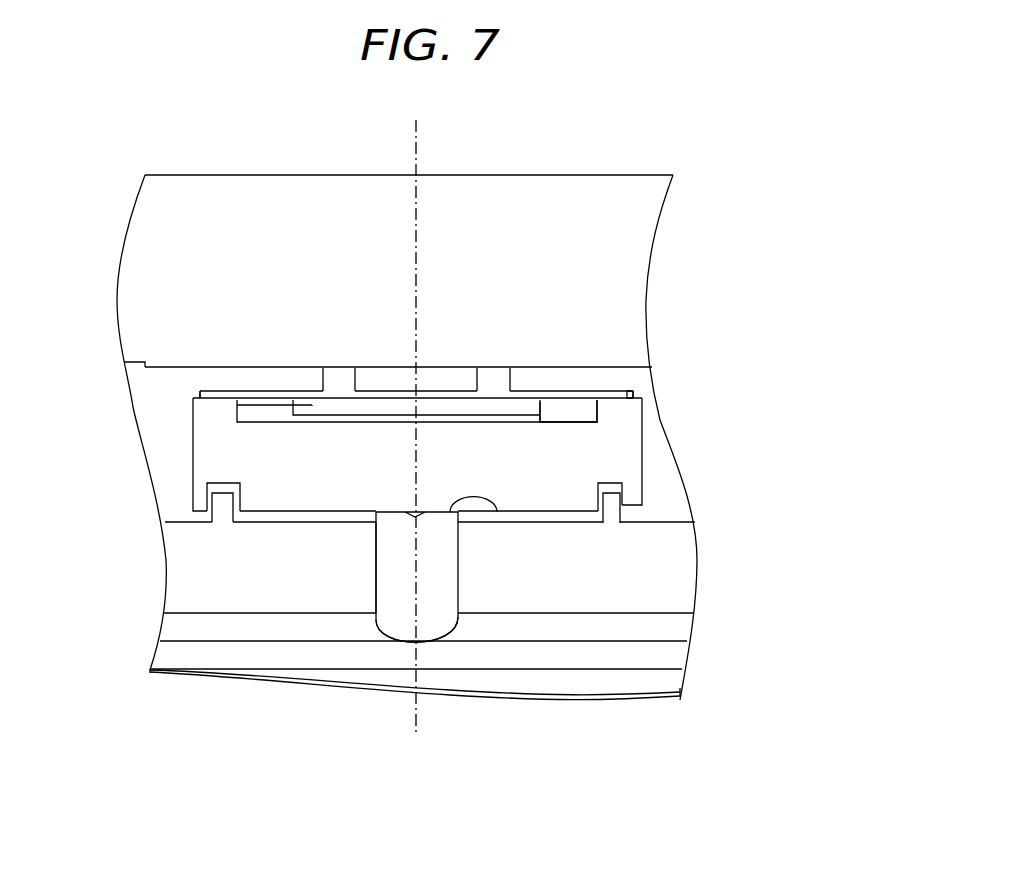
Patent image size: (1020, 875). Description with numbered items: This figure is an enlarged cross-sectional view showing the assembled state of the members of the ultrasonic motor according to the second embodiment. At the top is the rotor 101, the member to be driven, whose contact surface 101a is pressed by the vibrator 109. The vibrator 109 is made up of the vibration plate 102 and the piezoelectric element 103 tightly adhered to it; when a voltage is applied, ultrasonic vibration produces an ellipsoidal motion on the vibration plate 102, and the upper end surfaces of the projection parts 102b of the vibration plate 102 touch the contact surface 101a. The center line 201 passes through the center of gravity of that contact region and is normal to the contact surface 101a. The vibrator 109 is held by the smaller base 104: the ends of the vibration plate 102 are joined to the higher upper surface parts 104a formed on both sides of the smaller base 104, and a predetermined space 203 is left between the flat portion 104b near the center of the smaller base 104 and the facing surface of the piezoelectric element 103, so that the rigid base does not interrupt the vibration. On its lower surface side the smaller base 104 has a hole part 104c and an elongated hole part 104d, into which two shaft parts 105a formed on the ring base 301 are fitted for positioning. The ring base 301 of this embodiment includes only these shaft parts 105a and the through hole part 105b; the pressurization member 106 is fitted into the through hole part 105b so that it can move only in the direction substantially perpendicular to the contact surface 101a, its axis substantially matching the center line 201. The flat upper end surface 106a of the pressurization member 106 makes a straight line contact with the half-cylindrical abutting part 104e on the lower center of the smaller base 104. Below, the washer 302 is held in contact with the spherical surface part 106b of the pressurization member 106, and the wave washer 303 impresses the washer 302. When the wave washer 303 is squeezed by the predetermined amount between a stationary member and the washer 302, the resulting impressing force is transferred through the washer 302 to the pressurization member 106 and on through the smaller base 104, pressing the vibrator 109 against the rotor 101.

The rotor 101 is at (256, 190).
The contact surface 101a is at (193, 370).
The vibration plate 102 is at (637, 394).
The projection parts 102b is at (340, 373).
The piezoelectric element 103 is at (190, 400).
The smaller base 104 is at (622, 462).
The higher upper surface parts 104a is at (221, 398).
The flat portion 104b is at (570, 415).
The hole part 104c is at (622, 485).
The elongated hole part 104d is at (208, 490).
The abutting part 104e is at (420, 513).
The shaft parts 105a is at (225, 510).
The through hole part 105b is at (377, 563).
The pressurization member 106 is at (403, 623).
The upper end surface 106a is at (497, 512).
The spherical surface part 106b is at (383, 632).
The vibrator 109 is at (446, 357).
The center line 201 is at (420, 135).
The predetermined space 203 is at (317, 417).
The ring base 301 is at (673, 575).
The washer 302 is at (535, 653).
The wave washer 303 is at (660, 692).